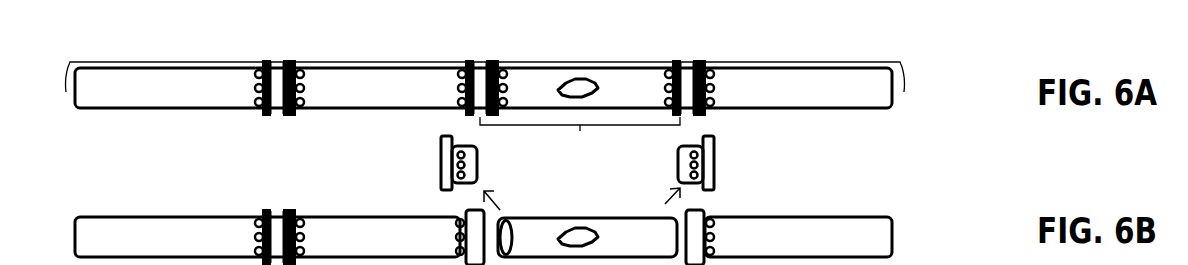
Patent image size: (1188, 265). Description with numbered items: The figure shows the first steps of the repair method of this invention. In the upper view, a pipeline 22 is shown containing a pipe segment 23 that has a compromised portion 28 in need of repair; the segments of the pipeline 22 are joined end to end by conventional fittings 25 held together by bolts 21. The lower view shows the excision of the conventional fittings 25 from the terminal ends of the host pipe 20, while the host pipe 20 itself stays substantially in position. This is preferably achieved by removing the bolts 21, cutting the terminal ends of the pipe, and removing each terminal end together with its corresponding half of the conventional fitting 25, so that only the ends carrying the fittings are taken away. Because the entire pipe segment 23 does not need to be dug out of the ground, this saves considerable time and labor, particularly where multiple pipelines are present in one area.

In FIG. 6A, the host pipe 20 is at (661, 102).
In FIG. 6B, the host pipe 20 is at (587, 237).
In FIG. 6A, the bolts 21 is at (712, 86).
In FIG. 6B, the bolts 21 is at (483, 237).
In FIG. 6A, the pipeline 22 is at (399, 62).
In FIG. 6A, the pipe segment 23 is at (541, 137).
In FIG. 6B, the conventional fitting 25 is at (450, 165).
In FIG. 6A, the compromised portion 28 is at (580, 78).
In FIG. 6B, the compromised portion 28 is at (578, 237).